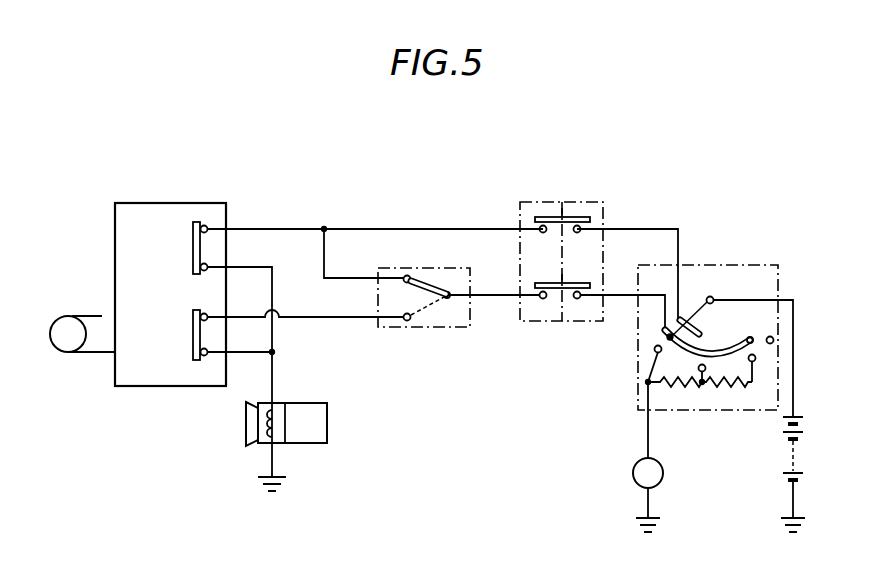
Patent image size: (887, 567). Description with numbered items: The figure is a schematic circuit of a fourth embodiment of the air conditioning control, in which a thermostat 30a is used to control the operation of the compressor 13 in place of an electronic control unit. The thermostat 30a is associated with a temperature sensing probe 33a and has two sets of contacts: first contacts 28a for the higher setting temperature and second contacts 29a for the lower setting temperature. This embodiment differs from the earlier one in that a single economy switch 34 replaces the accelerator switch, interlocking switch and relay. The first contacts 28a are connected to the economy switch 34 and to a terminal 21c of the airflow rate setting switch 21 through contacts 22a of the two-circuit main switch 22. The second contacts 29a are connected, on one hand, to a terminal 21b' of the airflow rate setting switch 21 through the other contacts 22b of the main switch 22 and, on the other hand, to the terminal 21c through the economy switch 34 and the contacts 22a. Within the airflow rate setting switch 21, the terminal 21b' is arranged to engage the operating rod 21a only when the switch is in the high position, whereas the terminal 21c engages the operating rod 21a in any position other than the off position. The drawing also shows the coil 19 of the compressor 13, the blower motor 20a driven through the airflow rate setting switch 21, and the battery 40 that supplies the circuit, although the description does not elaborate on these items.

The thermostat 30a is at (178, 203).
The second contacts 29a is at (192, 250).
The first contacts 28a is at (192, 338).
The temperature sensing probe 33a is at (70, 326).
The economy switch 34 is at (452, 328).
The main switch 22 is at (592, 202).
The contacts of the main switch 22b is at (550, 235).
The contacts of the main switch 22a is at (556, 300).
The airflow rate setting switch 21 is at (742, 265).
The terminal 21b' is at (702, 284).
The operating rod 21a is at (715, 300).
The terminal 21c is at (775, 340).
The blower motor 20a is at (663, 473).
The battery 40 is at (806, 446).
The compressor 13 is at (322, 418).
The solenoid coil 19 is at (276, 406).